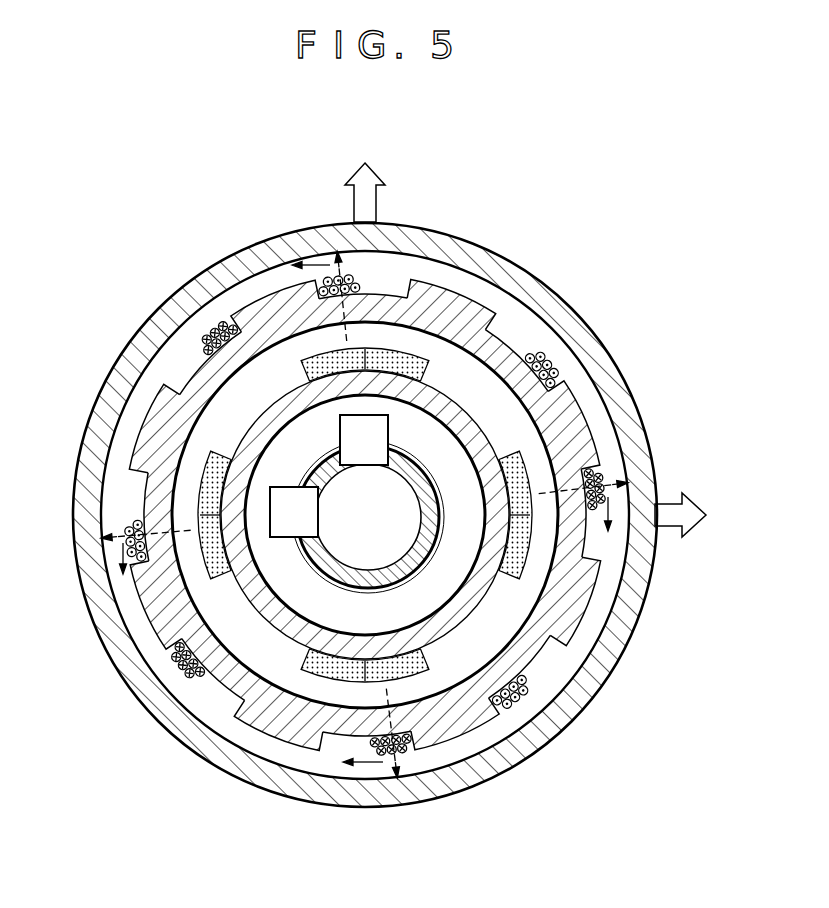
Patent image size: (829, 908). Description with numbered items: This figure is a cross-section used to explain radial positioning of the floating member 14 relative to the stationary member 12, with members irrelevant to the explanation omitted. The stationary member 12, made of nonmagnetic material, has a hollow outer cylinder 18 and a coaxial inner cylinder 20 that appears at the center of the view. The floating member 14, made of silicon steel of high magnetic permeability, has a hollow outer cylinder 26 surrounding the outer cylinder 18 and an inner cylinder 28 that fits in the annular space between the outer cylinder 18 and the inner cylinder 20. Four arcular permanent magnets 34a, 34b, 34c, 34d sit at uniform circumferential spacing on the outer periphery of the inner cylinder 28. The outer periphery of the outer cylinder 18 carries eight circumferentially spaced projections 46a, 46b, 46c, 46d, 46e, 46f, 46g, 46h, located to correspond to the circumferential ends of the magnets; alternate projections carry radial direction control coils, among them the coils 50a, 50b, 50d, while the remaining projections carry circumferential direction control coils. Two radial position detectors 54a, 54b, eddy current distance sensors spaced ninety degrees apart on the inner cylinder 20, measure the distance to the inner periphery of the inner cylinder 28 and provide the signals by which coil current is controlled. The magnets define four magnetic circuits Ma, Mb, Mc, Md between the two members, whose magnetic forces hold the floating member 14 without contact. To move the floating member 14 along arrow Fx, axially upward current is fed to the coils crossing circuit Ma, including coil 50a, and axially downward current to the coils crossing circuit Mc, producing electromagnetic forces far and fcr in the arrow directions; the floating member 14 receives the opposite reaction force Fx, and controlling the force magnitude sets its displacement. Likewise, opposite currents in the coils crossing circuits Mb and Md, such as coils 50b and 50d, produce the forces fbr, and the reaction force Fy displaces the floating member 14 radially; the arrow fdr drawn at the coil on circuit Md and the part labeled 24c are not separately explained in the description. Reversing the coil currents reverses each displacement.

The stationary member 12 is at (370, 522).
The floating member 14 is at (366, 508).
The outer cylinder 18 is at (375, 517).
The inner cylinder 20 is at (364, 577).
The outer member 24c is at (600, 697).
The outer cylinder 26 is at (366, 515).
The inner cylinder 28 is at (474, 585).
The arcular permanent magnet 34a is at (428, 364).
The arcular permanent magnet 34b is at (512, 578).
The arcular permanent magnet 34c is at (303, 668).
The arcular permanent magnet 34d is at (226, 456).
The upper projection 46a is at (270, 300).
The upper projection 46b is at (470, 306).
The upper projection 46c is at (575, 428).
The upper projection 46d is at (590, 605).
The upper projection 46e is at (480, 722).
The upper projection 46f is at (278, 735).
The upper projection 46g is at (152, 612).
The upper projection 46h is at (162, 410).
The radial direction control coil 50a is at (210, 335).
The radial direction control coil 50b is at (553, 366).
The radial direction control coil 50d is at (186, 672).
The radial position detector 54a is at (386, 430).
The radial position detector 54b is at (284, 525).
The magnetic circuit Ma is at (347, 260).
The magnetic circuit Mb is at (624, 484).
The magnetic circuit Mc is at (398, 775).
The magnetic circuit Md is at (117, 525).
The reaction force Fx is at (696, 515).
The reaction force Fy is at (365, 180).
The electromagnetic force far is at (318, 262).
The electromagnetic force fbr is at (632, 542).
The electromagnetic force fcr is at (355, 766).
The radial force fdr is at (120, 546).